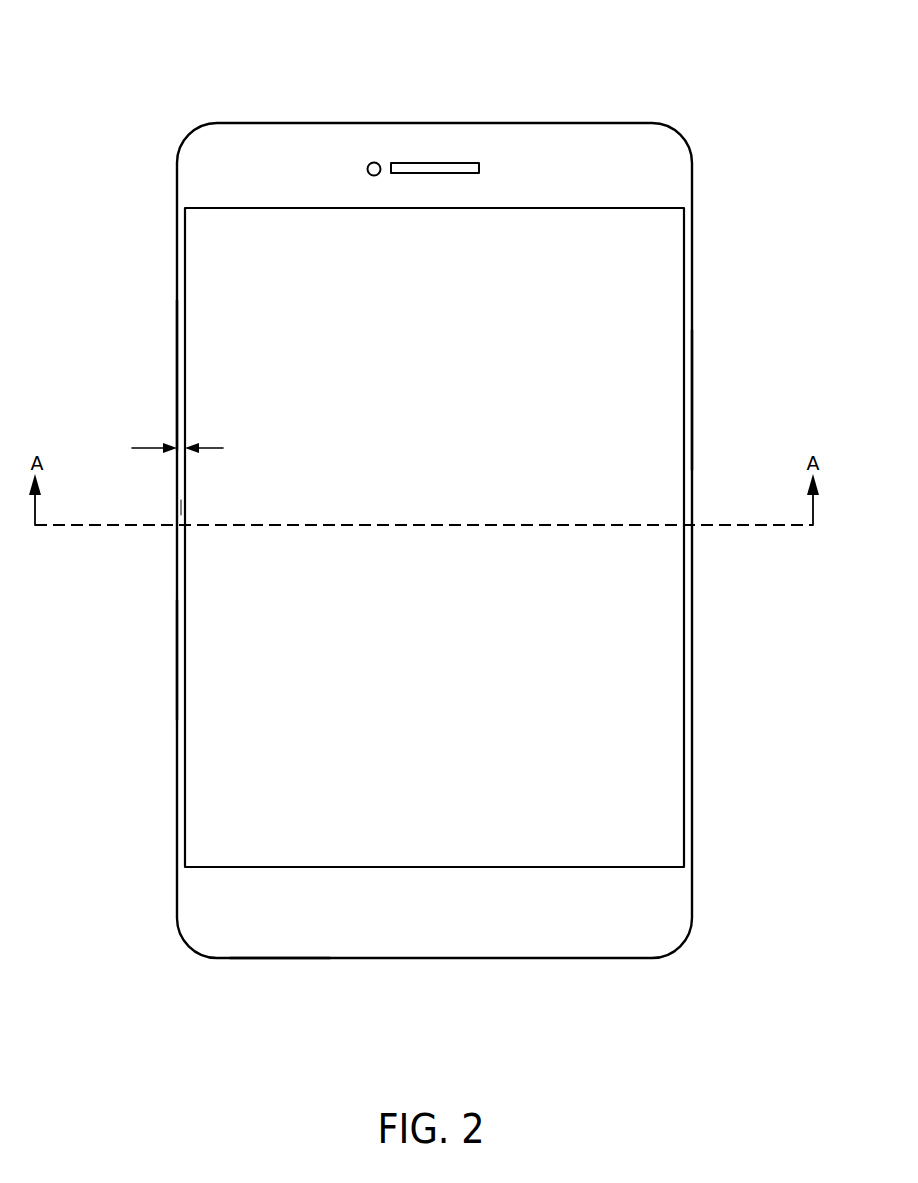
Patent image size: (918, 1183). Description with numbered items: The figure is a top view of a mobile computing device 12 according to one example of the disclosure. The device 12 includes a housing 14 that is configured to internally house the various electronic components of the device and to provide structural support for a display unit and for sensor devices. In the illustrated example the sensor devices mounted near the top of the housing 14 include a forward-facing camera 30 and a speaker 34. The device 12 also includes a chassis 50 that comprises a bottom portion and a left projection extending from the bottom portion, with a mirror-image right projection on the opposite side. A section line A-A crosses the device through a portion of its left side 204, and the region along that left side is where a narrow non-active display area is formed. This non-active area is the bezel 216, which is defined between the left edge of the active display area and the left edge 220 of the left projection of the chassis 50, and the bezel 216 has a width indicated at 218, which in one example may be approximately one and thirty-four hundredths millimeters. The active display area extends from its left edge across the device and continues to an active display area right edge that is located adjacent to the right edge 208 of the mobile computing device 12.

The mobile computing device 12 is at (152, 47).
The housing 14 is at (694, 162).
The forward-facing camera 30 is at (374, 160).
The speaker 34 is at (455, 163).
The chassis 50 is at (276, 958).
The left side 204 is at (146, 387).
The right edge 208 is at (744, 409).
The bezel 216 is at (181, 508).
The bezel width 218 is at (158, 445).
The left edge of left projection 220 is at (177, 657).